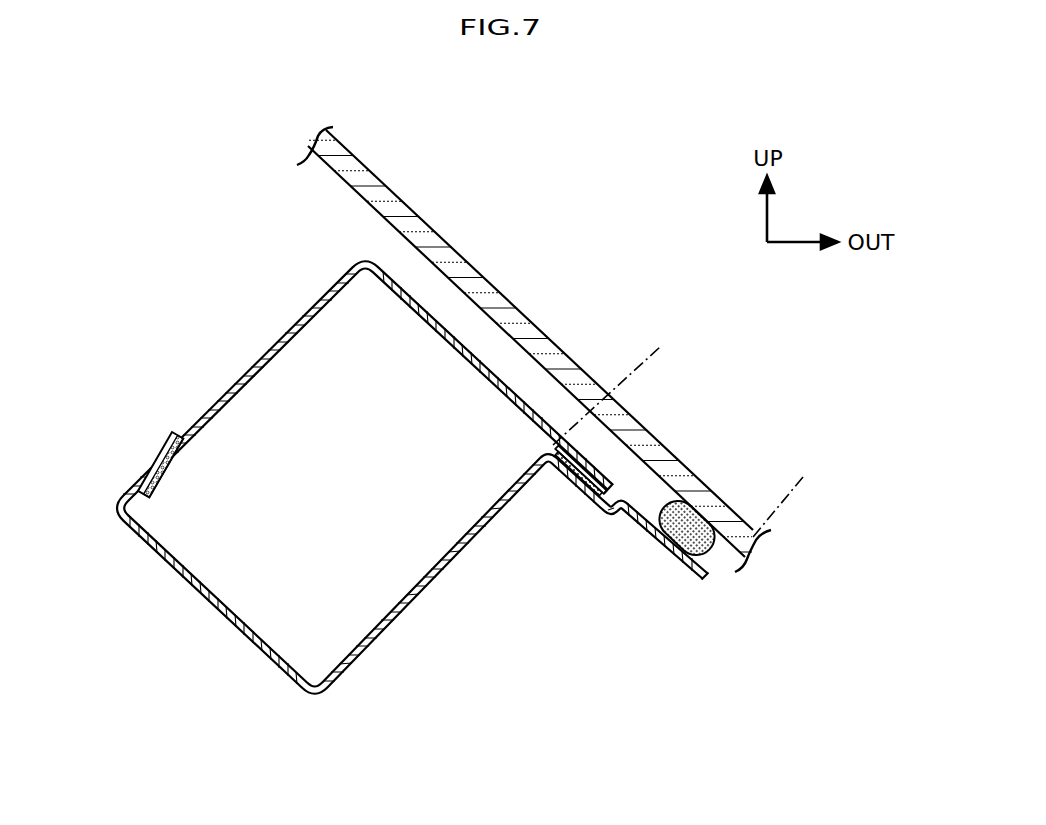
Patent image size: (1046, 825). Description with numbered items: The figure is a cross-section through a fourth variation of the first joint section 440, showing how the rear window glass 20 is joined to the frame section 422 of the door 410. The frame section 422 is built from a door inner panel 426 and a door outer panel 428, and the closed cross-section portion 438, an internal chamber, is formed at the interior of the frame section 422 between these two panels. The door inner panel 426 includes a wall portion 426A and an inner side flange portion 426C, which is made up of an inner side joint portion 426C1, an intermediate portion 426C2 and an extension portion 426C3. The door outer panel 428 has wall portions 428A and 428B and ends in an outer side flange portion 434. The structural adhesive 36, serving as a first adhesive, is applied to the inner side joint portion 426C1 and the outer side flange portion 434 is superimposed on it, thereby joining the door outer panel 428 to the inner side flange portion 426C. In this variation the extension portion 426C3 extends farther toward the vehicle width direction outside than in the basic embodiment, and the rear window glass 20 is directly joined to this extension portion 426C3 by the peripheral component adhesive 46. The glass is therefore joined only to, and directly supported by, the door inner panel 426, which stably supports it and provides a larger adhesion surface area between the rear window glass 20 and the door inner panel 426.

The rear window glass 20 is at (395, 190).
The structural adhesive 36 is at (558, 453).
The peripheral component adhesive 46 is at (697, 527).
The door 410 is at (573, 260).
The frame section 422 is at (449, 445).
The door inner panel 426 is at (465, 579).
The wall portion of door inner panel 426A is at (465, 562).
The inner side flange portion 426C is at (661, 576).
The inner side joint portion 426C1 is at (597, 492).
The intermediate portion of inner side flange portion 426C2 is at (614, 513).
The extension portion 426C3 is at (710, 578).
The door outer panel 428 is at (363, 342).
The wall portion of door outer panel 428A is at (428, 308).
The wall portion of door outer panel 428B is at (248, 377).
The outer side flange portion 434 is at (601, 492).
The closed cross-section portion 438 is at (323, 482).
The first joint section 440 is at (681, 435).